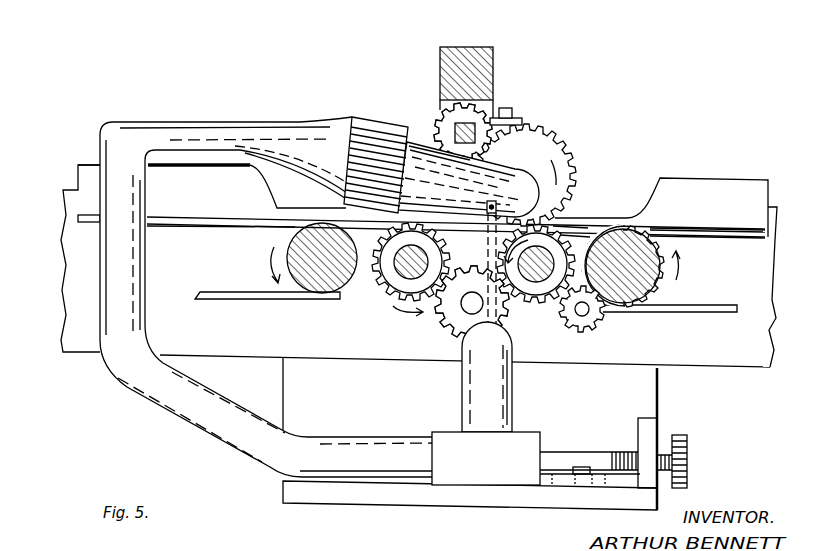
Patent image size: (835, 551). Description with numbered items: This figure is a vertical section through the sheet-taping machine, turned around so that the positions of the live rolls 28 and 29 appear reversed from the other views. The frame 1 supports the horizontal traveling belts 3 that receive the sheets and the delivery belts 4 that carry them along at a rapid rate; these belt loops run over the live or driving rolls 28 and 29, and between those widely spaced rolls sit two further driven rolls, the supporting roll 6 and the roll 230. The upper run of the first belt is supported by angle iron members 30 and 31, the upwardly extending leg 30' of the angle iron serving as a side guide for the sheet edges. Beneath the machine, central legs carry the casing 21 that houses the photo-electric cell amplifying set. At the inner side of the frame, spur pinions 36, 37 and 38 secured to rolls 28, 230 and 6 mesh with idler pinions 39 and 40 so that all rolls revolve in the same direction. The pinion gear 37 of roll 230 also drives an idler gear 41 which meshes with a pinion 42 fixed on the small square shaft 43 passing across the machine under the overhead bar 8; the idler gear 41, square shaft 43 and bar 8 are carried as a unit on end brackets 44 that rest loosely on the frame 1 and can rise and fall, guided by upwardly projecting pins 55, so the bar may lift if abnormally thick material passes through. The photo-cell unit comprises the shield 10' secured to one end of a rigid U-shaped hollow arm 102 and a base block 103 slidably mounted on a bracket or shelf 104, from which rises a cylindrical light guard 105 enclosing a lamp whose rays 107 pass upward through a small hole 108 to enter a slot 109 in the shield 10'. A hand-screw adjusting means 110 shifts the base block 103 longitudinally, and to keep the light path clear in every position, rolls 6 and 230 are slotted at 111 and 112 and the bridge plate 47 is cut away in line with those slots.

The frame 1 is at (81, 348).
The traveling belts 3 is at (738, 227).
The delivery belts 4 is at (183, 216).
The supporting roll 6 is at (405, 272).
The overhead bar 8 is at (456, 50).
The shield 10' is at (441, 167).
The casing 21 is at (650, 388).
The live roll 28 is at (638, 246).
The live roll 29 is at (293, 261).
The angle iron 30 is at (673, 275).
The upwardly extending leg 30' is at (661, 193).
The angle iron member 31 is at (90, 222).
The spur pinion 36 is at (661, 287).
The pinion gear 37 is at (560, 240).
The spur pinion 38 is at (448, 261).
The idler pinion 39 is at (594, 318).
The idler pinion 40 is at (449, 323).
The idler gear 41 is at (563, 160).
The pinion 42 is at (439, 123).
The square shaft 43 is at (473, 125).
The brackets 44 is at (440, 103).
The bridge plate 47 is at (446, 232).
The pins 55 is at (513, 114).
The U-shaped hollow arm 102 is at (200, 126).
The base block 103 is at (530, 437).
The bracket or shelf 104 is at (378, 502).
The light guard 105 is at (513, 378).
The rays 107 is at (490, 221).
The hole 108 is at (512, 333).
The slot 109 is at (493, 206).
The hand-screw adjusting means 110 is at (686, 449).
The slot 111 is at (402, 318).
The slot 112 is at (570, 240).
The driven roll 230 is at (541, 282).